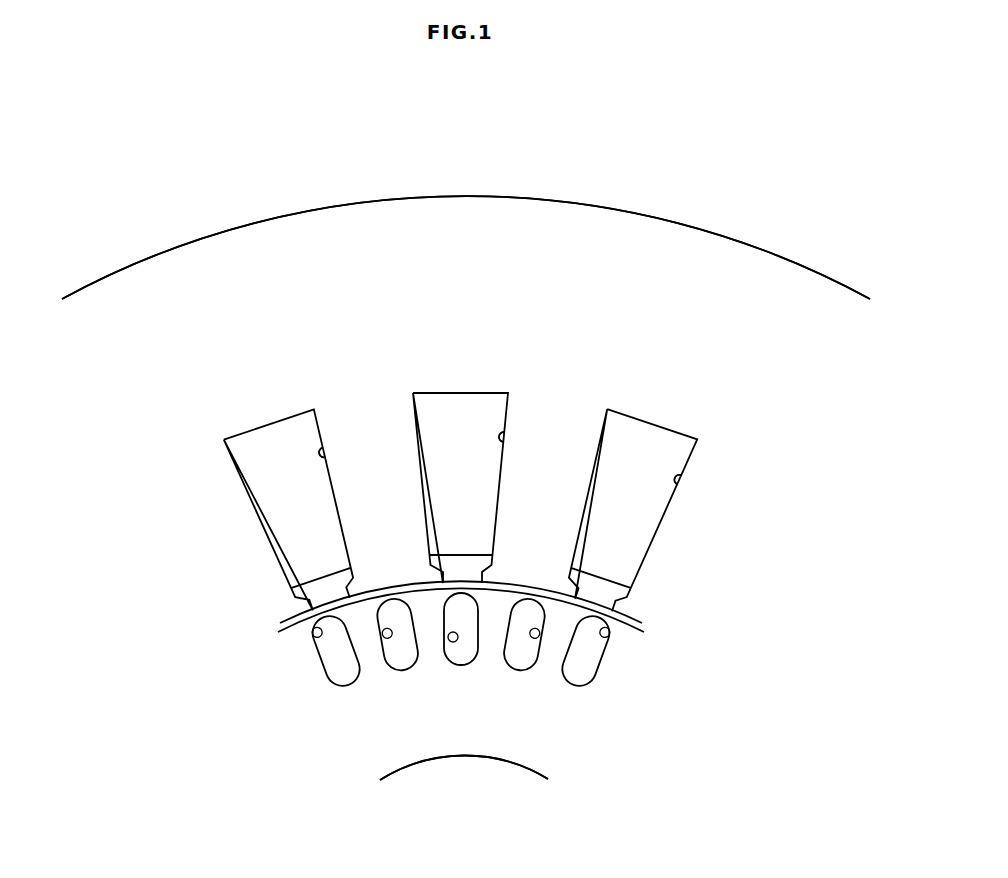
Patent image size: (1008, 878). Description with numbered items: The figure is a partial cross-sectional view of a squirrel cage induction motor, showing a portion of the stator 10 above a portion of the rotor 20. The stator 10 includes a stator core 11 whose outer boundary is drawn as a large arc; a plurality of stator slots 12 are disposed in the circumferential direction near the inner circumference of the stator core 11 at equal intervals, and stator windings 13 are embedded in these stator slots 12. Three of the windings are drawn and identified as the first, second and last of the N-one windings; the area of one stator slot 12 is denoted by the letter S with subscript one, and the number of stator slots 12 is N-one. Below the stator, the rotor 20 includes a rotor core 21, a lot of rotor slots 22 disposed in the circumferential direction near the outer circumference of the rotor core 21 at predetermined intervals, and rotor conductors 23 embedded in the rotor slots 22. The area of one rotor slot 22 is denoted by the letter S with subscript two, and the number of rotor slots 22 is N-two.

The stator 10 is at (628, 210).
The stator core 11 is at (478, 213).
The stator slot 12 is at (327, 459).
The stator winding 13 is at (472, 400).
The rotor 20 is at (493, 757).
The rotor core 21 is at (438, 748).
The rotor slot 22 is at (383, 633).
The rotor conductor 23 is at (333, 668).